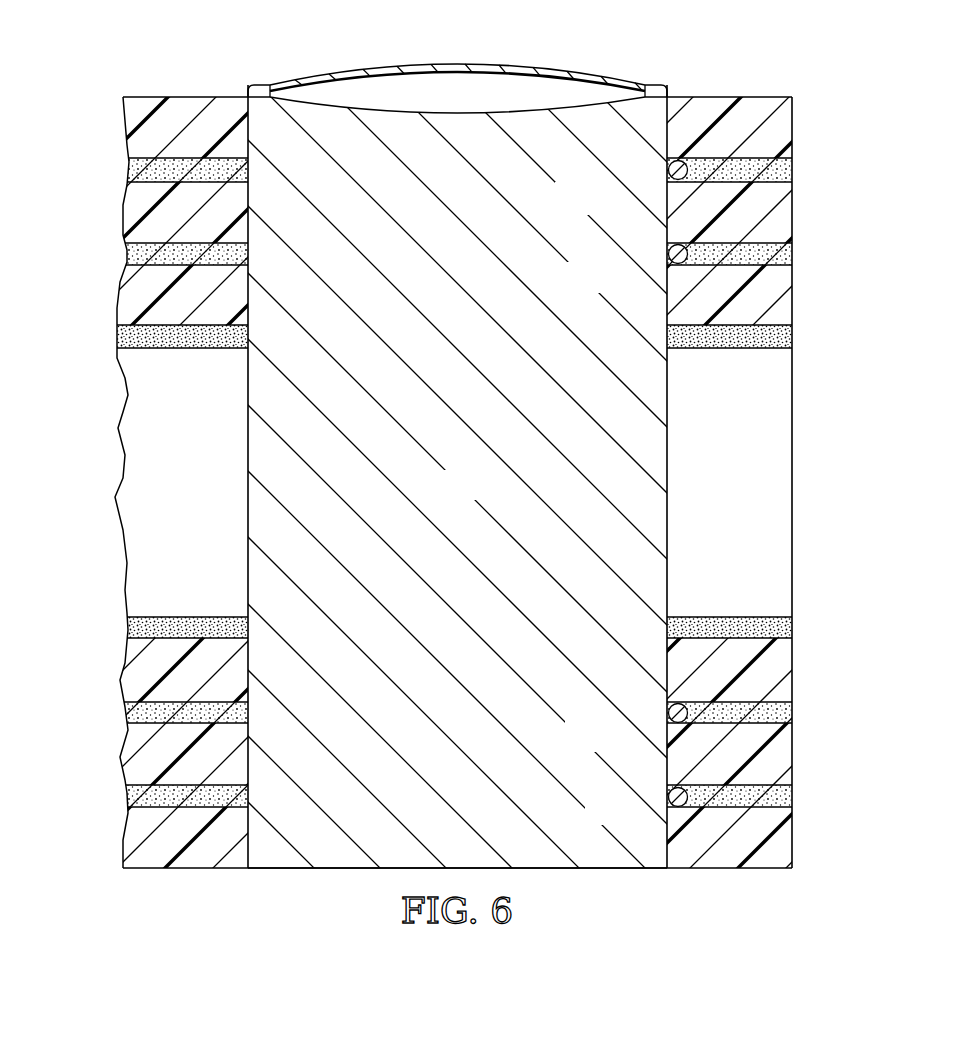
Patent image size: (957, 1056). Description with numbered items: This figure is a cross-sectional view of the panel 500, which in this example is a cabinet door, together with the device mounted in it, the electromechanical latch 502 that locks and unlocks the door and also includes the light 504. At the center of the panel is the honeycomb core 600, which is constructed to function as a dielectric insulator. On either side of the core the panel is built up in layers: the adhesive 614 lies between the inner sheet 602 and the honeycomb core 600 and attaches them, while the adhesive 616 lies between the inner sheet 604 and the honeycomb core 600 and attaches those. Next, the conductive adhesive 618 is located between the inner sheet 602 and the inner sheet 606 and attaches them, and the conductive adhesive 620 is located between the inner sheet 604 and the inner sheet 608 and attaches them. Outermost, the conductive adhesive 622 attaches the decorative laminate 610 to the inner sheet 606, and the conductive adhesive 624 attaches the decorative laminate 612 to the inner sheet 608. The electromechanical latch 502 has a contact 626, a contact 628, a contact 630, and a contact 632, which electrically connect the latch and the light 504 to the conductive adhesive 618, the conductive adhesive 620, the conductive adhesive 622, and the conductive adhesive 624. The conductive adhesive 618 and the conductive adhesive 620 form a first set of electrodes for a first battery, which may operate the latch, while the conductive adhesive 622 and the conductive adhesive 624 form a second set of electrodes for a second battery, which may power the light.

The panel 500 is at (478, 496).
The electromechanical latch 502 is at (457, 64).
The light 504 is at (262, 85).
The honeycomb core 600 is at (120, 432).
The inner sheet 602 is at (118, 310).
The inner sheet 604 is at (122, 684).
The inner sheet 606 is at (122, 210).
The inner sheet 608 is at (121, 745).
The decorative laminate 610 is at (122, 112).
The decorative laminate 612 is at (123, 828).
The adhesive 614 is at (787, 336).
The adhesive 616 is at (787, 628).
The conductive adhesive 618 is at (787, 252).
The conductive adhesive 620 is at (787, 712).
The conductive adhesive 622 is at (787, 167).
The conductive adhesive 624 is at (787, 797).
The contact 626 is at (668, 170).
The contact 628 is at (668, 254).
The contact 630 is at (668, 713).
The contact 632 is at (668, 797).